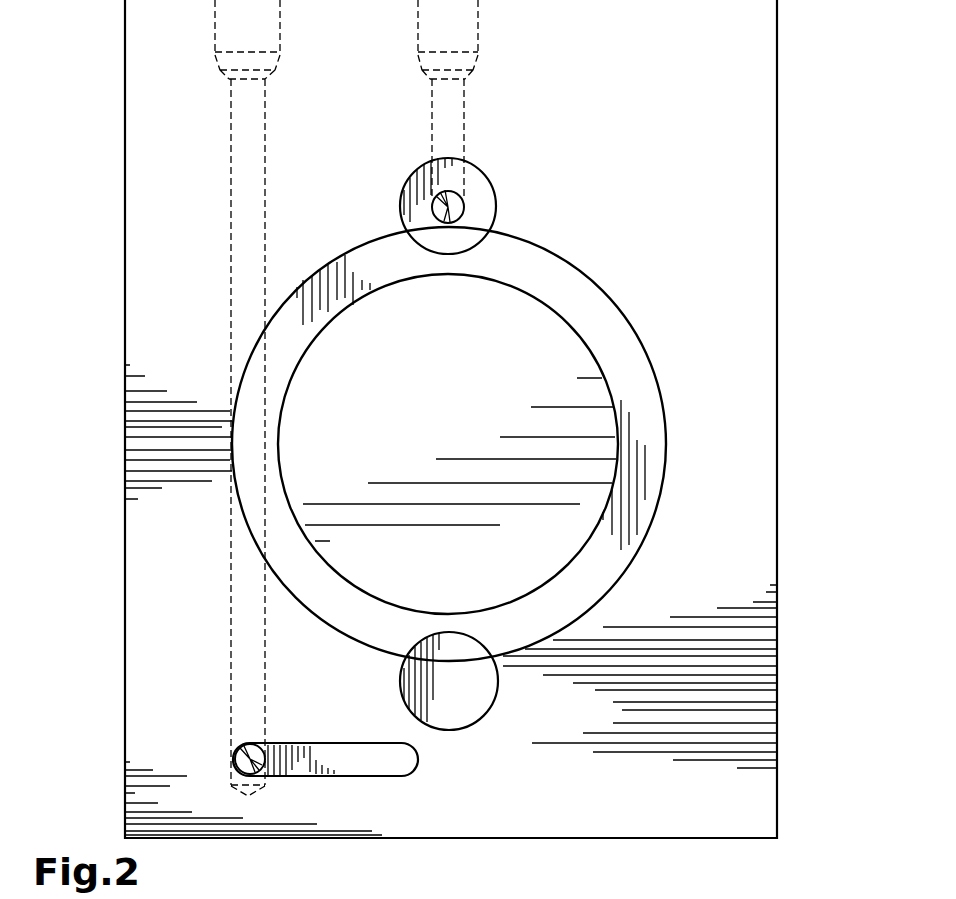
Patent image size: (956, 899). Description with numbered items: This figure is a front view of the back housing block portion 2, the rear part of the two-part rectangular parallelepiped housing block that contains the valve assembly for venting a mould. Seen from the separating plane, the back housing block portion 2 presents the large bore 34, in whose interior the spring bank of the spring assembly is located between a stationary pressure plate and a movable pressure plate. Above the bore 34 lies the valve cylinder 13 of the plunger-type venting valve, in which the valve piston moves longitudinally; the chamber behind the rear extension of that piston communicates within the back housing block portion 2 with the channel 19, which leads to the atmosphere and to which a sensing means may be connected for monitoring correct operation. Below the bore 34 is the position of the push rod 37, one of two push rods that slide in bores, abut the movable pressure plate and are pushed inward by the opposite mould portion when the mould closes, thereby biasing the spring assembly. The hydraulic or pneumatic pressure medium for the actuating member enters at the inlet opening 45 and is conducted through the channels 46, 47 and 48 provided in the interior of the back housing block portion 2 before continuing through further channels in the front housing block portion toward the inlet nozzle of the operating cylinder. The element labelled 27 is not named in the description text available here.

The back housing block portion 2 is at (697, 134).
The valve cylinder 13 is at (497, 200).
The channel 19 is at (452, 25).
The annular ring 27 is at (660, 388).
The bore 34 is at (587, 345).
The push rod 37 is at (456, 730).
The inlet opening 45 is at (248, 15).
The channel 46 is at (248, 190).
The channel 47 is at (250, 760).
The channel 48 is at (340, 755).